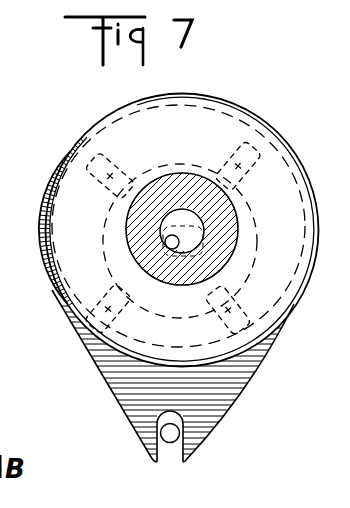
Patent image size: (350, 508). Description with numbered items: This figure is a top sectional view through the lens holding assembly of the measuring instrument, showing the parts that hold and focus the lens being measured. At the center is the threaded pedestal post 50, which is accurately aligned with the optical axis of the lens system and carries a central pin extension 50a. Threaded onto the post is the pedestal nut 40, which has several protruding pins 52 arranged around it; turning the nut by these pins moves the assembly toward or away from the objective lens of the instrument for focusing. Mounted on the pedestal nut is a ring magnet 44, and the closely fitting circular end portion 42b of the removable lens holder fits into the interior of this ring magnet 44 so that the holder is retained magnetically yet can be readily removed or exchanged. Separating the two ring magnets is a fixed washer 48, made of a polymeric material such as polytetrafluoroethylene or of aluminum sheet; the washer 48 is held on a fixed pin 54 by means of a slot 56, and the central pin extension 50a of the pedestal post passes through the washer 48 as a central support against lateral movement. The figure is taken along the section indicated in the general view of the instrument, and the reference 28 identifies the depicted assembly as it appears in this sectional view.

The disc assembly 28 is at (71, 138).
The ring magnet 44 is at (285, 153).
The pedestal nut 40 is at (104, 250).
The protruding pins 52 is at (110, 168).
The circular end portion 42b is at (236, 213).
The threaded pedestal post 50 is at (196, 251).
The central pin extension 50a is at (172, 235).
The fixed washer 48 is at (118, 404).
The fixed pin 54 is at (178, 432).
The slot 56 is at (172, 458).